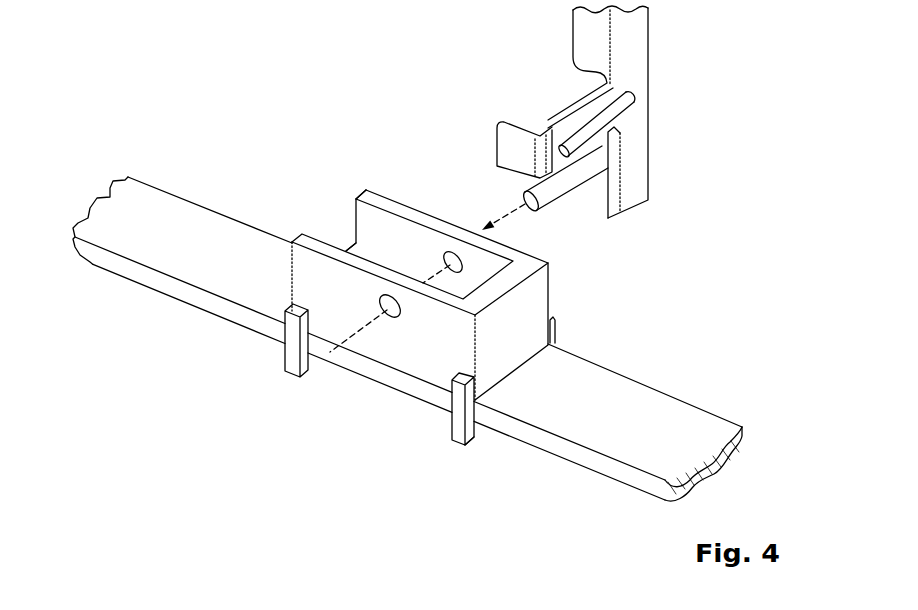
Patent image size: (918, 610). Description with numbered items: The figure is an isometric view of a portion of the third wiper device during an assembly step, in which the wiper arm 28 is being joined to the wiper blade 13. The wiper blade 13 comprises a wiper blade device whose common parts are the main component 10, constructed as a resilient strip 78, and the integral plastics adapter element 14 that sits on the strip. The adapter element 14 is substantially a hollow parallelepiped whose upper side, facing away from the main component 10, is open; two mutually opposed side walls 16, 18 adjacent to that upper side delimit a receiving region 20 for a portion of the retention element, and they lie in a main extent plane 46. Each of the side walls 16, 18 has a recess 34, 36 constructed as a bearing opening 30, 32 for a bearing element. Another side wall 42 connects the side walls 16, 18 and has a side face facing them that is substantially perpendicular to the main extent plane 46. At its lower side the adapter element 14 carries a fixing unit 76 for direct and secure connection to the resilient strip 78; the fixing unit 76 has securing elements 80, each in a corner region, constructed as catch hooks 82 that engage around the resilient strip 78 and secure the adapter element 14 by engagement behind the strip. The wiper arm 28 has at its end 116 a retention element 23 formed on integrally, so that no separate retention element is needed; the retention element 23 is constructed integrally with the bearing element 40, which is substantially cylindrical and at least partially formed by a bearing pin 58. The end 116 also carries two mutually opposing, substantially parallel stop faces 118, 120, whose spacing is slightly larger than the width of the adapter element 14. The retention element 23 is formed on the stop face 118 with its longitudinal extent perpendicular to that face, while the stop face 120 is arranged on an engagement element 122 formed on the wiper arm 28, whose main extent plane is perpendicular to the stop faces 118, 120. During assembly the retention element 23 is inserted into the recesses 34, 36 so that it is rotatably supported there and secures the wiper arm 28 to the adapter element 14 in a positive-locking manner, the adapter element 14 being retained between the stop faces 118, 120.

The wiper blade 13 is at (116, 65).
The main component 10 is at (407, 339).
The resilient strip 78 is at (642, 398).
The adapter element 14 is at (539, 292).
The side wall 16 is at (385, 217).
The side wall 18 is at (432, 357).
The receiving region 20 is at (351, 236).
The main extent plane 46 is at (351, 211).
The bearing opening 30 is at (436, 228).
The recess 34 is at (453, 250).
The bearing opening 32 is at (367, 355).
The recess 36 is at (383, 319).
The other side wall 42 is at (498, 348).
The fixing unit 76 is at (481, 449).
The securing element 80 is at (455, 446).
The catch hook 82 is at (457, 430).
The retention element 23 is at (577, 197).
The bearing element 40 is at (577, 197).
The bearing pin 58 is at (546, 199).
The wiper arm 28 is at (640, 50).
The end of the wiper arm 116 is at (669, 116).
The stop face 118 is at (584, 190).
The stop face 120 is at (522, 118).
The engagement element 122 is at (577, 128).